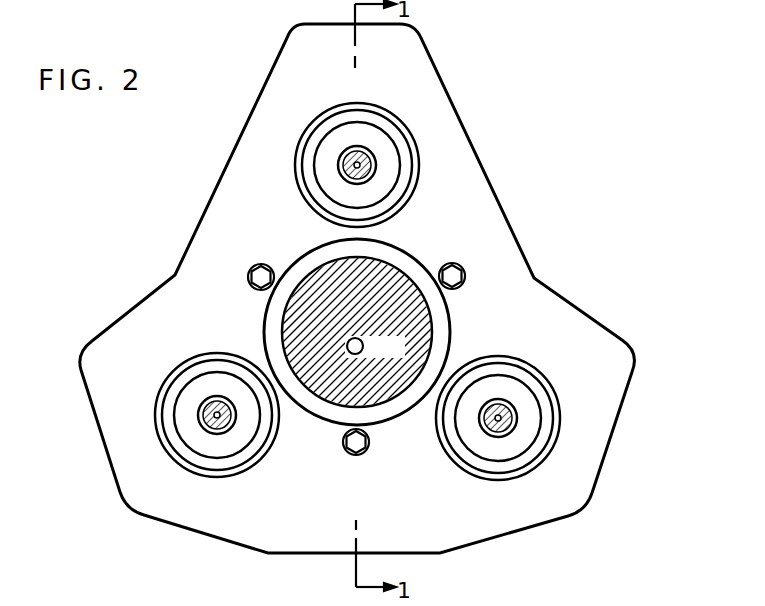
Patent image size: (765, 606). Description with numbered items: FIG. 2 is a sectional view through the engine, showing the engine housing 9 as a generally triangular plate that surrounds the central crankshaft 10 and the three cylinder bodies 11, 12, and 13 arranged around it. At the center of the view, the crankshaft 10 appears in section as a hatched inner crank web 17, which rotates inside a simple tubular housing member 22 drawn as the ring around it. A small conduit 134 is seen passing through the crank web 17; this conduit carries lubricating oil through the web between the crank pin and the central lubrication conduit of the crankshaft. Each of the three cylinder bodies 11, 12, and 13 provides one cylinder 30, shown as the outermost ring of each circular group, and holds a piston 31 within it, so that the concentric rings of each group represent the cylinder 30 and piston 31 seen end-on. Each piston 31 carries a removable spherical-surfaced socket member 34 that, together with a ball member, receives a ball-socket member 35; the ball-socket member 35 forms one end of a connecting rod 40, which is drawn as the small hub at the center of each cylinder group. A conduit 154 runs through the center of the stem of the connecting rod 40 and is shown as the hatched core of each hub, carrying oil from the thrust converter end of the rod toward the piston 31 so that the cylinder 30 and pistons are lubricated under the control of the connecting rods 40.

The engine housing 9 is at (199, 225).
The central crankshaft 10 is at (387, 332).
The cylinder body 11 is at (417, 157).
The cylinder body 12 is at (560, 420).
The cylinder body 13 is at (200, 475).
The inner crank web 17 is at (402, 311).
The tubular housing member 22 is at (398, 255).
The cylinder 30 is at (322, 216).
The piston 31 is at (419, 172).
The spherical-surfaced socket member 34 is at (354, 296).
The ball-socket member 35 is at (392, 135).
The connecting rod 40 is at (339, 174).
The conduit 134 is at (364, 347).
The conduit 154 is at (360, 162).